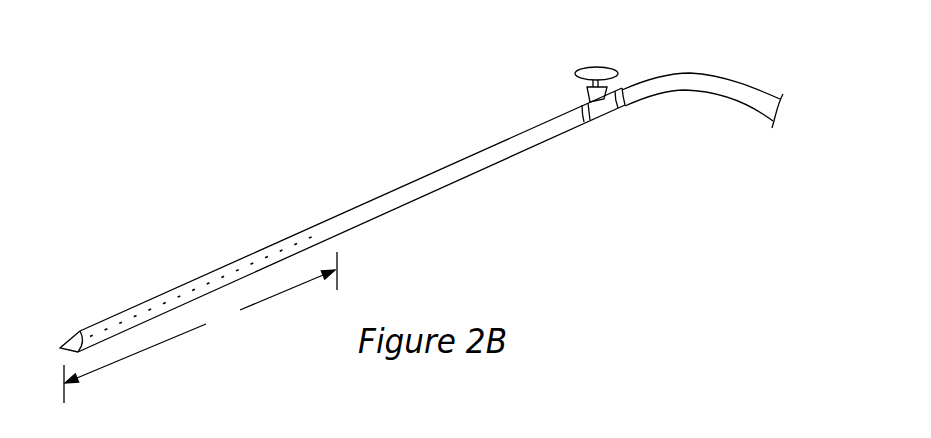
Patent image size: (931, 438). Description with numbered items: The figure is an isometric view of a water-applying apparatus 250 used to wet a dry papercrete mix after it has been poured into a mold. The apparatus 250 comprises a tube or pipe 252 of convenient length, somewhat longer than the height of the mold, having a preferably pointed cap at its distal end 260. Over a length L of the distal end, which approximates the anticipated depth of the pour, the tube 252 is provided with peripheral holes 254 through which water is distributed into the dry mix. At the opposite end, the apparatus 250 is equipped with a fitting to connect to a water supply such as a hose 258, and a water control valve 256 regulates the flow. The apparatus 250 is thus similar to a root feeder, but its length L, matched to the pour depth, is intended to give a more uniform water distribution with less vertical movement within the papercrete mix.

The apparatus 250 is at (267, 143).
The tube or pipe 252 is at (413, 182).
The peripheral holes 254 is at (328, 233).
The water control valve 256 is at (611, 70).
The hose 258 is at (680, 92).
The end 260 is at (75, 308).